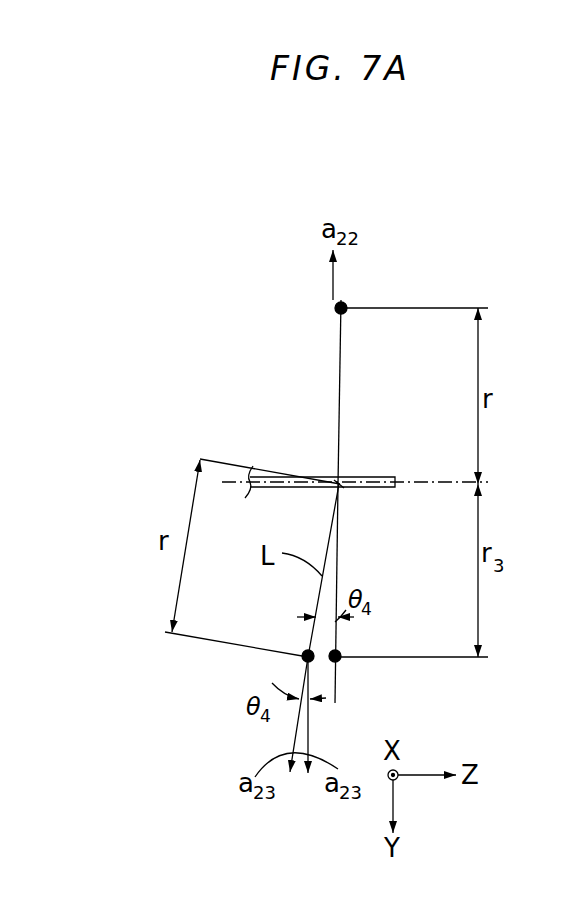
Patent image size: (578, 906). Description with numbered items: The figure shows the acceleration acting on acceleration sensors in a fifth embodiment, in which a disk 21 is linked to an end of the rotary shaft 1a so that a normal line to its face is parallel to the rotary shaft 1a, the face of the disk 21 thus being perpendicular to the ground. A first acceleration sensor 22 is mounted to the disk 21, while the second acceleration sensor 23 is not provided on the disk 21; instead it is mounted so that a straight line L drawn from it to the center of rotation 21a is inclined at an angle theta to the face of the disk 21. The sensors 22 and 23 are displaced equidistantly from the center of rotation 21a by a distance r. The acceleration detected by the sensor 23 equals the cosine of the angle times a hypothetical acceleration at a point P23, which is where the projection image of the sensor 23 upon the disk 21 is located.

The acceleration sensor 22 is at (345, 303).
The disk 21 is at (338, 411).
The rotary shaft 1a is at (362, 478).
The center of rotation 21a is at (342, 489).
The acceleration sensor 23 is at (304, 658).
The point P23 is at (340, 661).